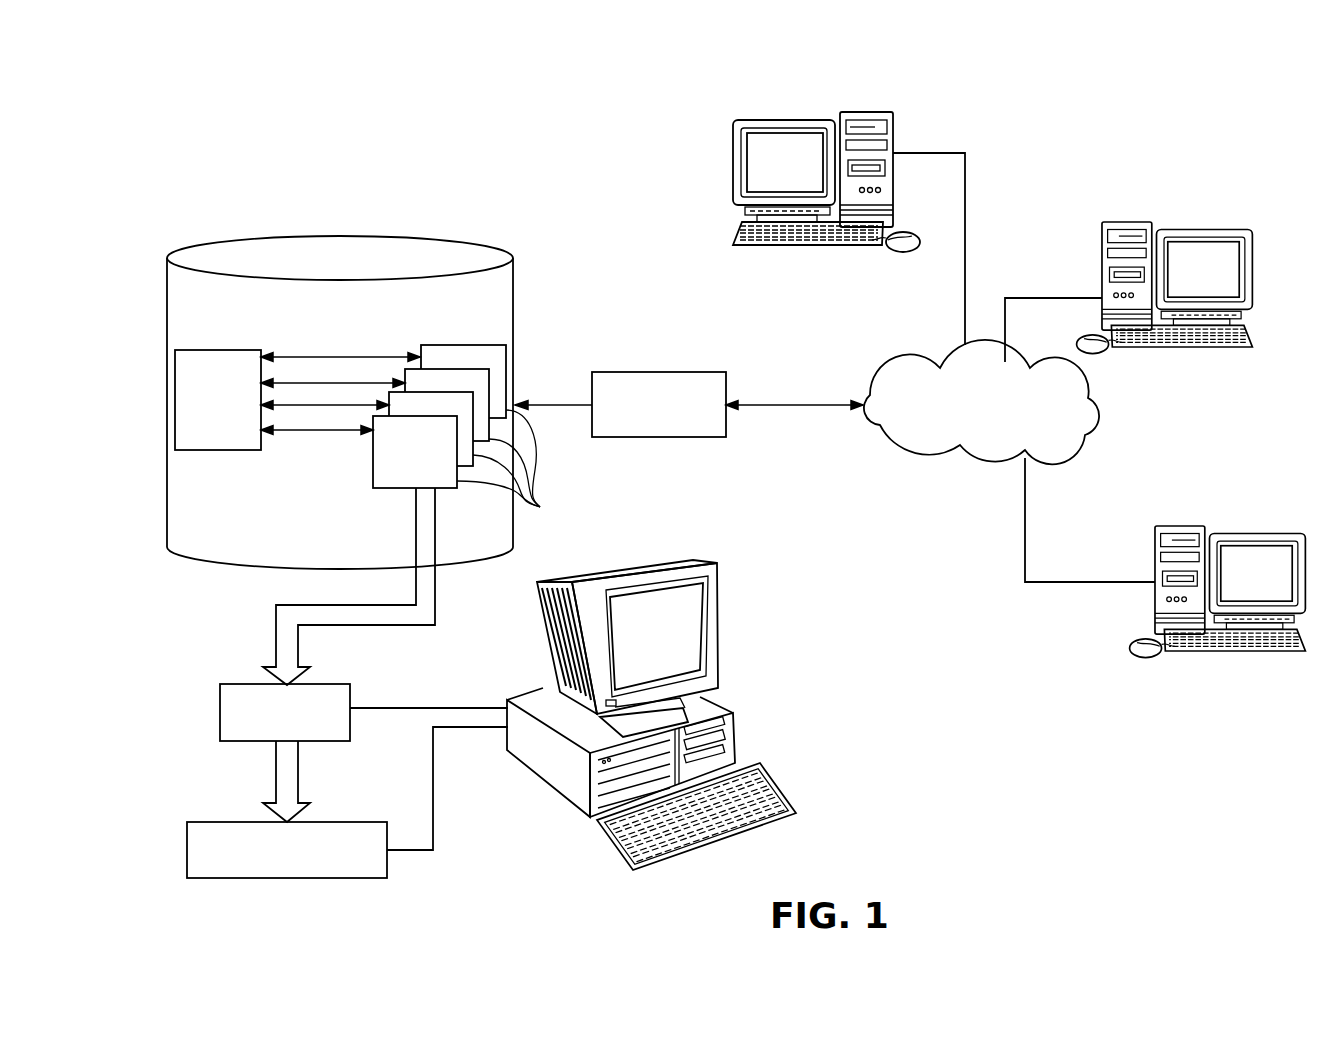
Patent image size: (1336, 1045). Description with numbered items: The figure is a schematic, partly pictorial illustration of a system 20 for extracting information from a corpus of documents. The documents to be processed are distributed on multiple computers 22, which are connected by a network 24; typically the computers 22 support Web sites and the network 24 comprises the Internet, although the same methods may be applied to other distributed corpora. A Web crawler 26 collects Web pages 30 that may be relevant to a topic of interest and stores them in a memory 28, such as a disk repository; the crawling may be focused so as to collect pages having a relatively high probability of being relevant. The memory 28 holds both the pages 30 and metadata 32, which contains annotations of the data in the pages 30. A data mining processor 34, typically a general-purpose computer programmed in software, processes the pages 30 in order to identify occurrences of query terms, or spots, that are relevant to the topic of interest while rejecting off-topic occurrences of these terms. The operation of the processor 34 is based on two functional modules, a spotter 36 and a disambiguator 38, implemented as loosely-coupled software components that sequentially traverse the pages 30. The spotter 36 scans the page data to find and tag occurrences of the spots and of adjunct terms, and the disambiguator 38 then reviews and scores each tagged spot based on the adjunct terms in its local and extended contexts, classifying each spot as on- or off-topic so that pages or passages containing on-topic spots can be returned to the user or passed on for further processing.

The system 20 is at (352, 128).
The computers 22 is at (888, 137).
The network 24 is at (893, 370).
The Web crawler 26 is at (650, 371).
The memory 28 is at (487, 255).
The Web pages 30 is at (470, 434).
The metadata 32 is at (207, 348).
The data mining processor 34 is at (530, 693).
The spotter 36 is at (334, 683).
The disambiguator 38 is at (334, 822).